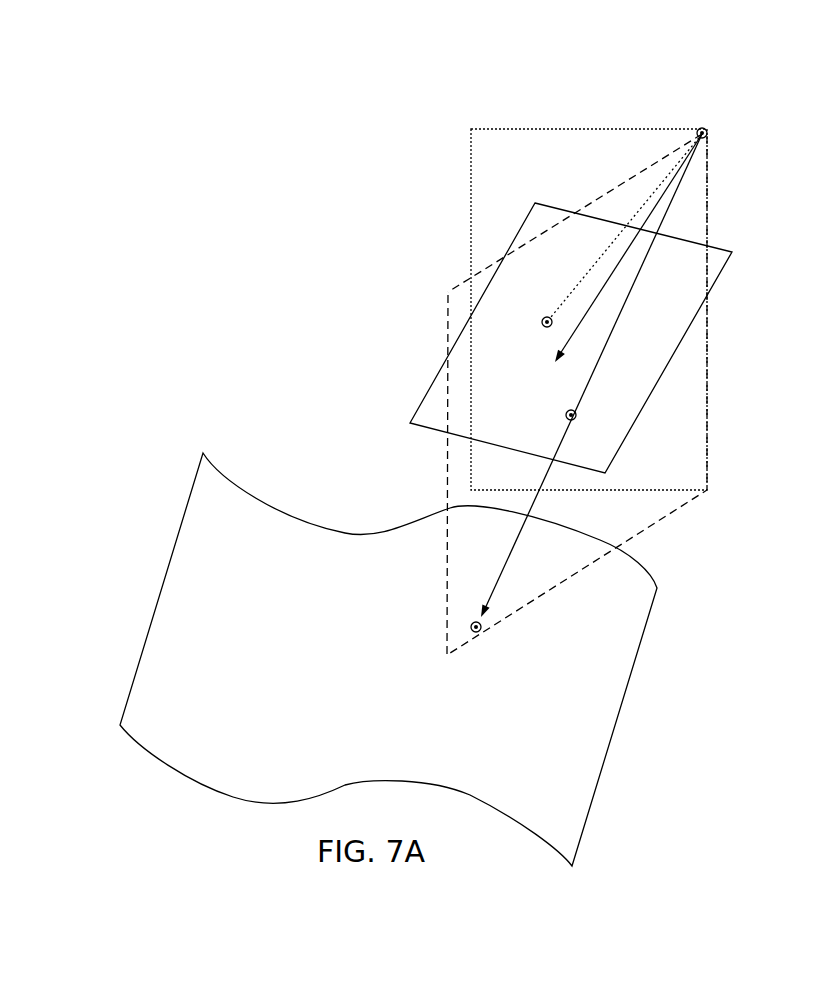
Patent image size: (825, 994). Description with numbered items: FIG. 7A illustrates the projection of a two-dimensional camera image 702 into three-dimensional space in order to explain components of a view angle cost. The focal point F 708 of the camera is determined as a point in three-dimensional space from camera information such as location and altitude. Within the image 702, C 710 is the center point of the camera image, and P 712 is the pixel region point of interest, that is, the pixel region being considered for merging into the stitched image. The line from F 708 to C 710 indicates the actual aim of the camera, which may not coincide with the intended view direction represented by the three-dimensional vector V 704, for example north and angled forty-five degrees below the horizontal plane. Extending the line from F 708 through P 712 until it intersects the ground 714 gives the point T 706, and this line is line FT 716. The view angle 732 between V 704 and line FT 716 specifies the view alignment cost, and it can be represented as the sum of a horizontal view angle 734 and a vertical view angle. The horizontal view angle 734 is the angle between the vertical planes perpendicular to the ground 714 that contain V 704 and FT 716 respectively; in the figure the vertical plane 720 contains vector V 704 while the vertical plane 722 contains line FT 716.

The two-dimensional image 702 is at (410, 423).
The vector V 704 is at (612, 272).
The point T 706 is at (480, 633).
The focal point F 708 is at (706, 128).
The center point C 710 is at (542, 328).
The pixel region point P 712 is at (576, 415).
The ground 714 is at (610, 747).
The line FT 716 is at (632, 290).
The vertical plane 720 is at (471, 128).
The vertical plane 722 is at (667, 520).
The view angle 732 is at (580, 328).
The horizontal view angle 734 is at (637, 163).